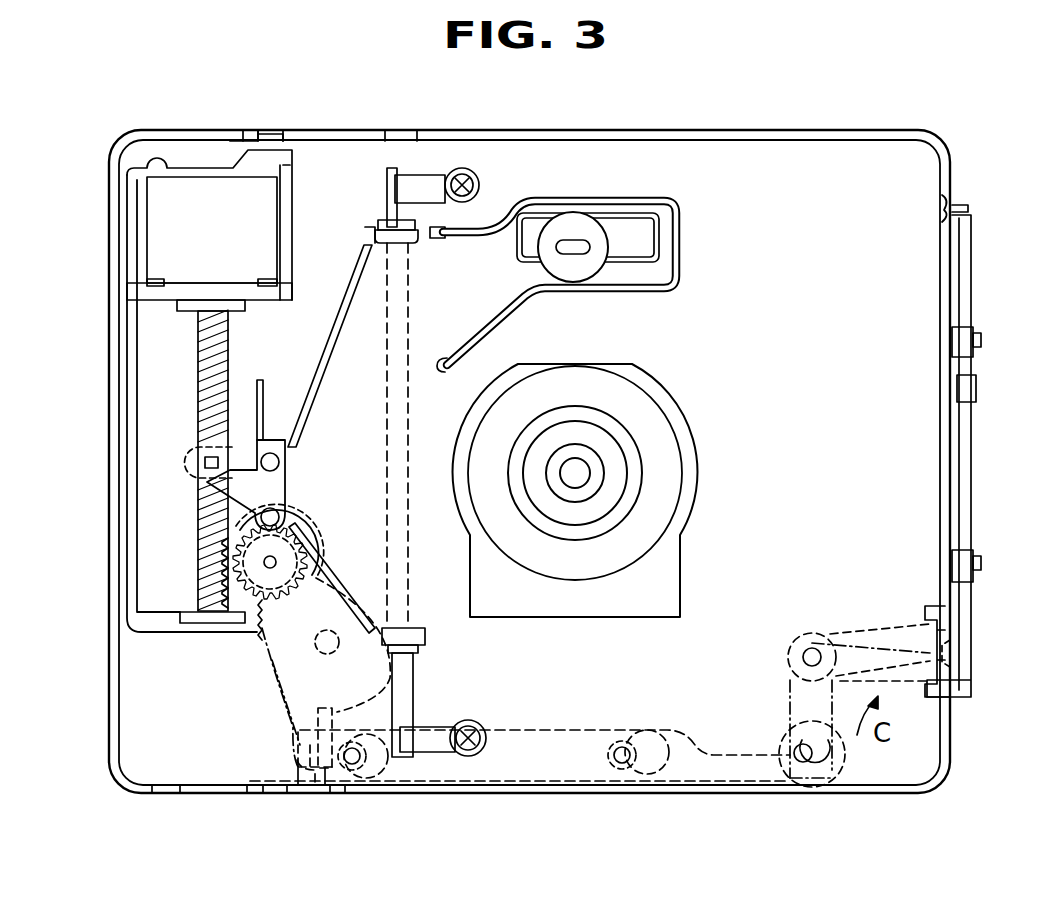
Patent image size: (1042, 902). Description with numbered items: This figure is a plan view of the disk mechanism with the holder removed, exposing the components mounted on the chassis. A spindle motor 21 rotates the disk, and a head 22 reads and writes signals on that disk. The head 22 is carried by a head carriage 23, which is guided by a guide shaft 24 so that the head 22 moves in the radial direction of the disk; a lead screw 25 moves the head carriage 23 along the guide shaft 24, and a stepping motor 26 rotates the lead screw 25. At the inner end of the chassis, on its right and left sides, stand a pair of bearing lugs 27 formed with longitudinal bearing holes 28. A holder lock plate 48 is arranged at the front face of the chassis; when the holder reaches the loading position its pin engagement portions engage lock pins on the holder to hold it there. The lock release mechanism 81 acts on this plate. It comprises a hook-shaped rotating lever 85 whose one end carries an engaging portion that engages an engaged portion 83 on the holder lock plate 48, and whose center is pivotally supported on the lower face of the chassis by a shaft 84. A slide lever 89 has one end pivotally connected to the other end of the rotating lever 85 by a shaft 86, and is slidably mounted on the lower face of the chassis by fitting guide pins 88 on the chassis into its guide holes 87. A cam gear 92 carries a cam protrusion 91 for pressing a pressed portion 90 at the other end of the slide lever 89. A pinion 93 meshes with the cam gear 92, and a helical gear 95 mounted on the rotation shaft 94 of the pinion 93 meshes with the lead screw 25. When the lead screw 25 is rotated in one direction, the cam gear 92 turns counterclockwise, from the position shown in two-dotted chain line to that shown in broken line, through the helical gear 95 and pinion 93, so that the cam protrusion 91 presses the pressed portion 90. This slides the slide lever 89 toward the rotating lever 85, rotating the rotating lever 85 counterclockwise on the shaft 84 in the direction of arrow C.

The spindle motor 21 is at (628, 418).
The head 22 is at (574, 235).
The head carriage 23 is at (480, 212).
The guide shaft 24 is at (405, 175).
The lead screw 25 is at (185, 372).
The stepping motor 26 is at (172, 233).
The bearing lugs 27 is at (240, 133).
The bearing holes 28 is at (270, 133).
The holder lock plate 48 is at (978, 500).
The lock release mechanism 81 is at (682, 692).
The engaged portion 83 is at (930, 608).
The shaft 84 is at (808, 650).
The rotating lever 85 is at (853, 630).
The shaft 86 is at (800, 735).
The guide holes 87 is at (360, 762).
The guide pins 88 is at (353, 762).
The slide lever 89 is at (577, 722).
The pressed portion 90 is at (345, 765).
The cam protrusion 91 is at (280, 718).
The cam gear 92 is at (262, 676).
The pinion 93 is at (258, 617).
The rotation shaft 94 is at (266, 562).
The helical gear 95 is at (232, 600).